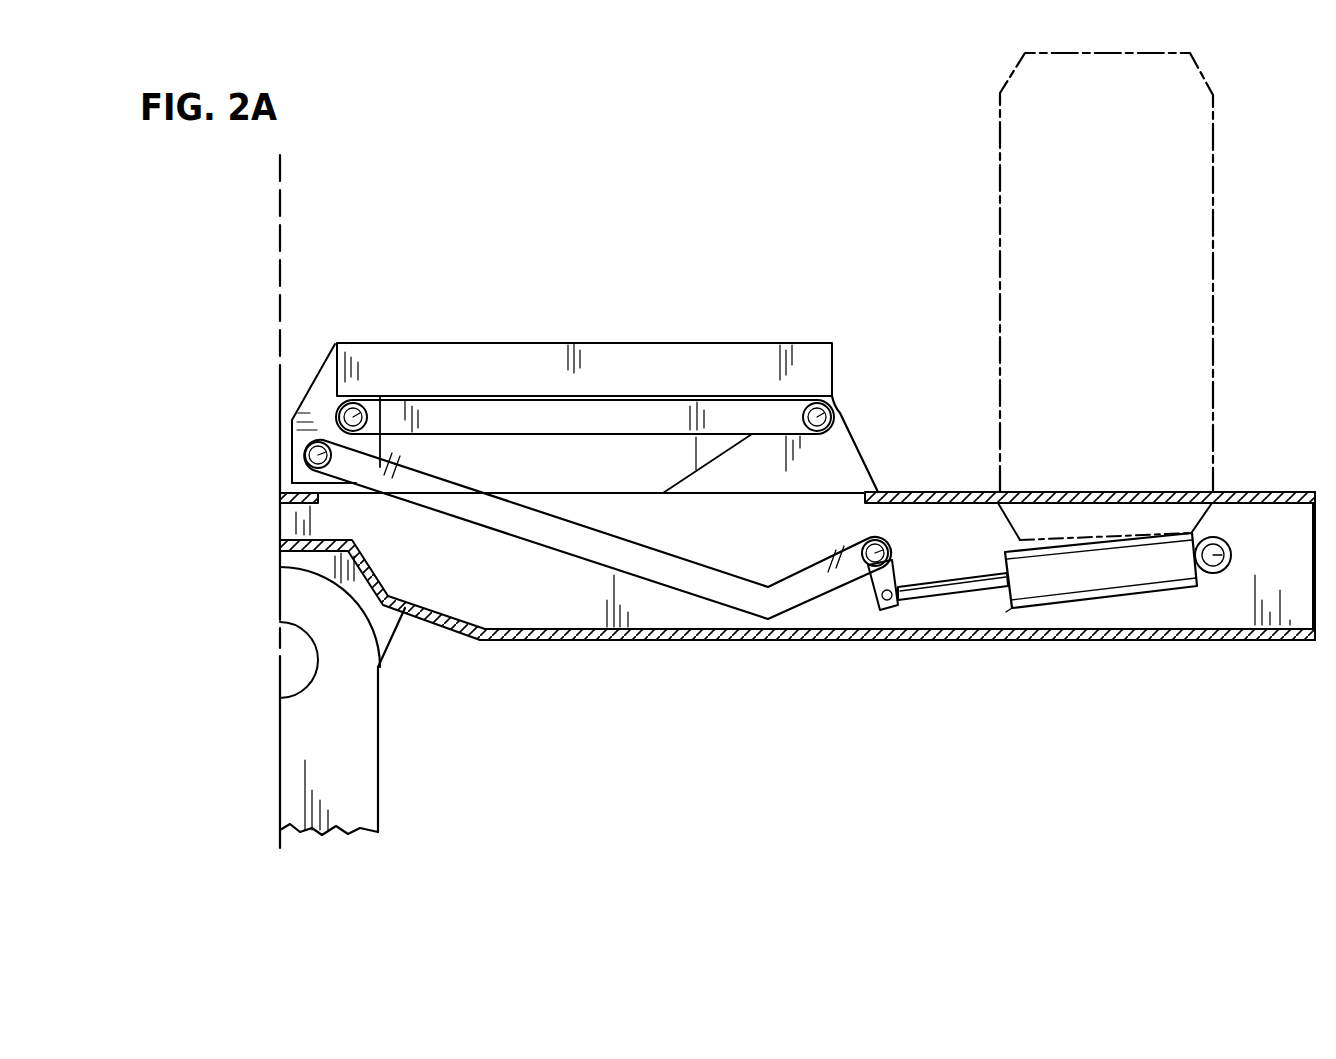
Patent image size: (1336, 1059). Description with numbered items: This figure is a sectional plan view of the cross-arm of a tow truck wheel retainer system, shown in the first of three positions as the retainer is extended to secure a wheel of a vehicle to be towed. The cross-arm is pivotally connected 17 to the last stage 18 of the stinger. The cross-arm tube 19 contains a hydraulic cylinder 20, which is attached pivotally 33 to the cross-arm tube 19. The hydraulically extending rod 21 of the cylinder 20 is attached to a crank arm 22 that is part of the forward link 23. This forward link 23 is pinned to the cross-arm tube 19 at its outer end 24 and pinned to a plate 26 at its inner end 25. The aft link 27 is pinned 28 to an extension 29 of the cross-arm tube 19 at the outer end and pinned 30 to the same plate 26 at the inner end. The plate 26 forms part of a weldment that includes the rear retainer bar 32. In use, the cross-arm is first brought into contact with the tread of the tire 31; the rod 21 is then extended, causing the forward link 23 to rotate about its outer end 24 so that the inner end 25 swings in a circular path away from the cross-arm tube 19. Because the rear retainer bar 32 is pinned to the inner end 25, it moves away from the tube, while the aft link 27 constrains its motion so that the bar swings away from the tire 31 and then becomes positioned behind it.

The pivotal connection 17 is at (297, 662).
The last stage of the stinger 18 is at (355, 732).
The cross-arm tube 19 is at (1003, 613).
The hydraulic cylinder 20 is at (1162, 572).
The hydraulically extending rod 21 is at (940, 590).
The crank arm 22 is at (880, 578).
The forward link 23 is at (518, 520).
The outer end 24 is at (890, 548).
The inner end 25 is at (320, 456).
The plate 26 is at (318, 413).
The aft link 27 is at (612, 413).
The pin 28 is at (837, 412).
The extension of the cross-arm tube 29 is at (847, 458).
The pin 30 is at (345, 413).
The tire 31 is at (1190, 197).
The rear retainer bar 32 is at (509, 357).
The pivotal attachment 33 is at (1231, 554).